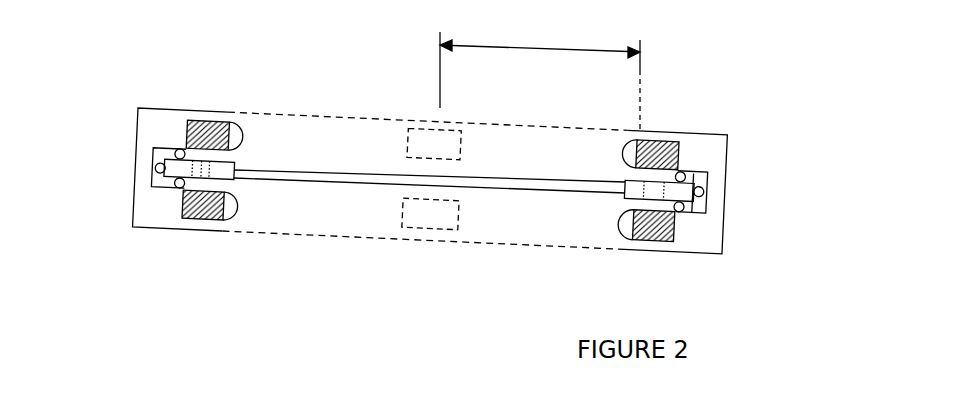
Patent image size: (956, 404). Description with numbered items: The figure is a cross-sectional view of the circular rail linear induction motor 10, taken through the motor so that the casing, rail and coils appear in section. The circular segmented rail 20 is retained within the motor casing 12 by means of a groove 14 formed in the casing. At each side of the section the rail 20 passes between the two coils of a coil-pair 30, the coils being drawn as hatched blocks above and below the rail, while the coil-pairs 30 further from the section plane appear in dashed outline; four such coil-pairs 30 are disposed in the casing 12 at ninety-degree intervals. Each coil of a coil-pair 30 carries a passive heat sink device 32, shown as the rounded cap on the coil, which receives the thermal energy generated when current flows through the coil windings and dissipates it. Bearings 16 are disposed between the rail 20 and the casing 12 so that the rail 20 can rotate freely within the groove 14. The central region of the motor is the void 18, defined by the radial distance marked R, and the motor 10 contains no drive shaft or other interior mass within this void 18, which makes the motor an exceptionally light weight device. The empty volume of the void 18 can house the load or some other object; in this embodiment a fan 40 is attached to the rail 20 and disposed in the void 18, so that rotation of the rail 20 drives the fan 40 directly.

The circular rail linear induction motor 10 is at (790, 52).
The motor casing platform 12 is at (136, 106).
The groove 14 is at (690, 174).
The bearings 16 is at (705, 205).
The void 18 is at (580, 153).
The circular segmented rail 20 is at (239, 185).
The coil-pairs 30 is at (177, 198).
The passive heat sink device 32 is at (246, 130).
The fan 40 is at (586, 194).